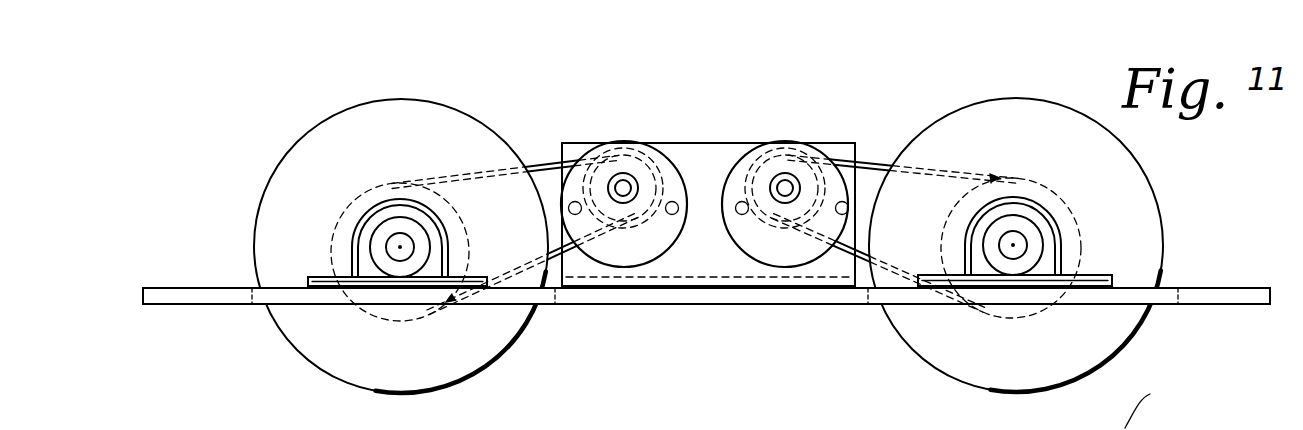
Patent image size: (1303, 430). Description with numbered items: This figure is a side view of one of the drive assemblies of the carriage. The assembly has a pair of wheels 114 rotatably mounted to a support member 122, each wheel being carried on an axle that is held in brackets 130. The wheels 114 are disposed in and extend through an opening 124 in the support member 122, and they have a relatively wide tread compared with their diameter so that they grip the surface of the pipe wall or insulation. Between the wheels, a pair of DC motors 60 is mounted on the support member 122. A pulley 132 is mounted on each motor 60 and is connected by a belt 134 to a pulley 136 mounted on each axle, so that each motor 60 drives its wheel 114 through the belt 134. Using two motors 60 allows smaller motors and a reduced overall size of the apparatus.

The DC motor 60 is at (785, 260).
The wheel 114 is at (490, 338).
The support member 122 is at (220, 298).
The opening 124 is at (860, 294).
The bracket 130 is at (1150, 394).
The pulley 132 is at (762, 140).
The belt 134 is at (528, 166).
The pulley 136 is at (401, 183).